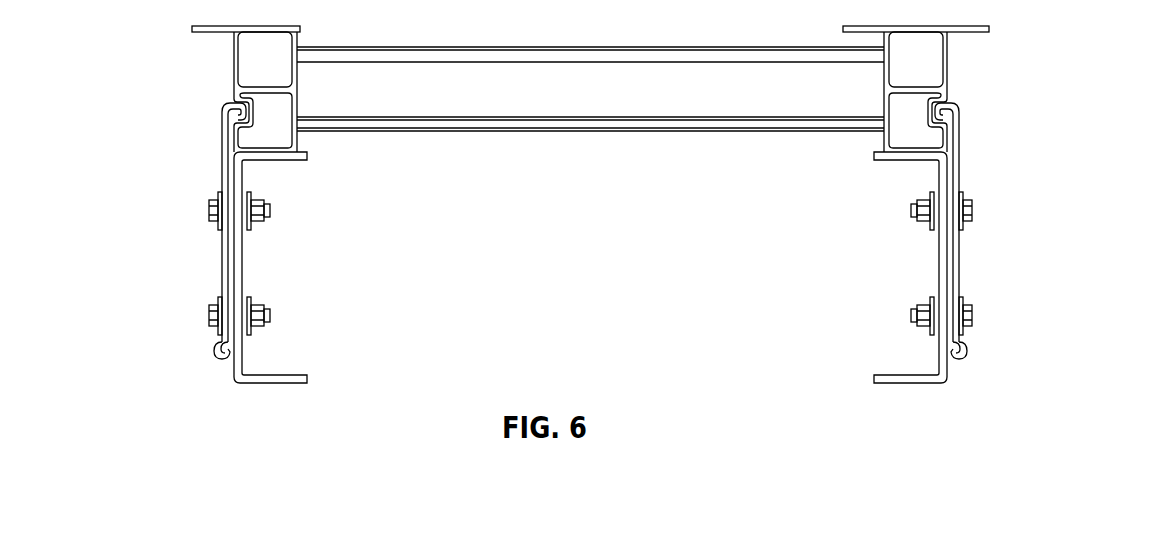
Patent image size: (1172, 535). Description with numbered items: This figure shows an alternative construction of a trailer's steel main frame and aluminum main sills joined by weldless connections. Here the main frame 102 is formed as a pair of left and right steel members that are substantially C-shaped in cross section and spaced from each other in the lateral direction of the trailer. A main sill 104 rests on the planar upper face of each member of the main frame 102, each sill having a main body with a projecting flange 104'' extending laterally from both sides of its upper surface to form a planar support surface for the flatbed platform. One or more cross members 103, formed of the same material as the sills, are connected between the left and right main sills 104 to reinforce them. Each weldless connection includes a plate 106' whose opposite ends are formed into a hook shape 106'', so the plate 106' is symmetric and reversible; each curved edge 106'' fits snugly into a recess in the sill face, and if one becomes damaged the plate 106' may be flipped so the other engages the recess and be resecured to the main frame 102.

The main frame 102 is at (937, 377).
The cross member 103 is at (448, 105).
The main sill 104 is at (512, 92).
The projecting flange 104'' is at (590, 17).
The plate 106' is at (572, 227).
The hook-shaped end-edge 106'' is at (662, 239).